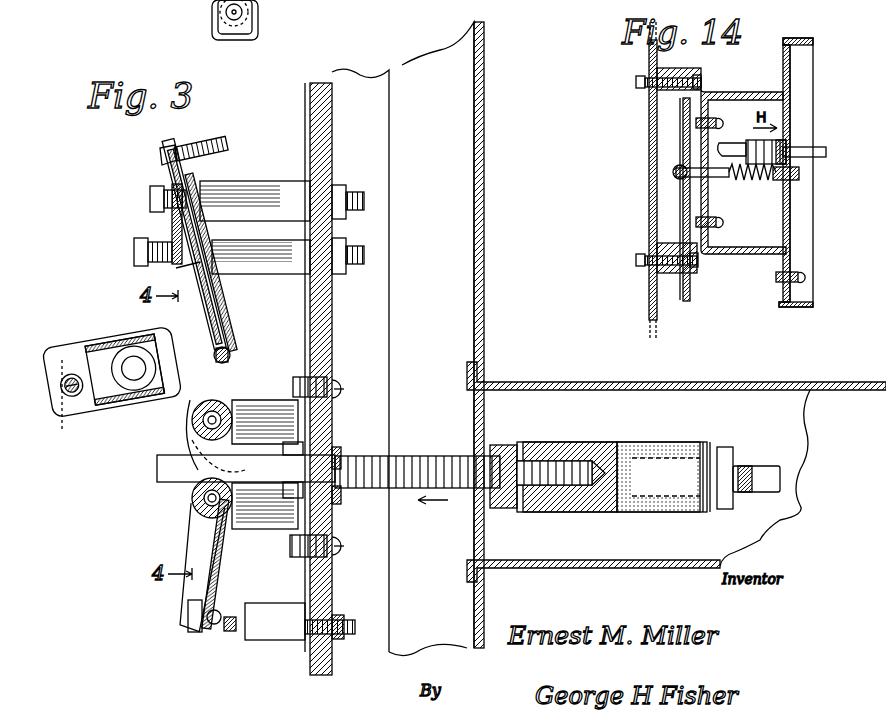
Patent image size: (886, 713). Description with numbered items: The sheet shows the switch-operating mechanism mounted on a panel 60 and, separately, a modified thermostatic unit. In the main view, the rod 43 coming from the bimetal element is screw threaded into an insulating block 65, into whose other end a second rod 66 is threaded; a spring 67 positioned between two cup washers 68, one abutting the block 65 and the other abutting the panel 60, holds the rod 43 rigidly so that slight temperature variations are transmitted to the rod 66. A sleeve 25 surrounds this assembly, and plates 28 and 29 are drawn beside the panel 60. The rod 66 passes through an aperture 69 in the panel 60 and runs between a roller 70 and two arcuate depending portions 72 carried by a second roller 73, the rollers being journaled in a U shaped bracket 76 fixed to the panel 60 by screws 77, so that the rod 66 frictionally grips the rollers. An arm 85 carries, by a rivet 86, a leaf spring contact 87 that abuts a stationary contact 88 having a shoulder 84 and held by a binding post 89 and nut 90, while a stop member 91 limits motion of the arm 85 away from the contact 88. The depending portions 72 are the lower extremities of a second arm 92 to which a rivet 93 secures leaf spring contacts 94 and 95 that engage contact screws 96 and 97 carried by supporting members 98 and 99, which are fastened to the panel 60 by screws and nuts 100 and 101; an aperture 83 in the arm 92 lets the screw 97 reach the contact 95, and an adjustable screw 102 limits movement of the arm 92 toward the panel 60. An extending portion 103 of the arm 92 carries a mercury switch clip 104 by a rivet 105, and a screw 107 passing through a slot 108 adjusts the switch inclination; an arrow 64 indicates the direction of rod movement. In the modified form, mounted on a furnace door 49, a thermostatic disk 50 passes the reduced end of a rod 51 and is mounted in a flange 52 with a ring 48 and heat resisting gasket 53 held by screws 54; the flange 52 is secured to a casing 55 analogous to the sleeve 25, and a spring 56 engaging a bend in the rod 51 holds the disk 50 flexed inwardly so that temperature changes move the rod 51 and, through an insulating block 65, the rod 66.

In FIG. 3, the sleeve 25 is at (640, 383).
In FIG. 3, the plate 28 is at (468, 112).
In FIG. 3, the plate 29 is at (364, 96).
In FIG. 3, the rod 43 is at (760, 478).
In FIG. 14, the ring 48 is at (678, 274).
In FIG. 14, the furnace door 49 is at (650, 62).
In FIG. 14, the disk 50 is at (683, 135).
In FIG. 14, the rod 51 is at (733, 150).
In FIG. 14, the flange 52 is at (690, 72).
In FIG. 3, the heat resisting gasket 53 is at (176, 230).
In FIG. 14, the heat resisting gasket 53 is at (655, 70).
In FIG. 14, the screws 54 is at (638, 82).
In FIG. 14, the casing 55 is at (750, 96).
In FIG. 14, the spring 56 is at (752, 180).
In FIG. 3, the panel 60 is at (318, 115).
In FIG. 3, the direction arrow 64 is at (130, 490).
In FIG. 3, the insulating block 65 is at (660, 455).
In FIG. 14, the insulating block 65 is at (774, 142).
In FIG. 3, the second rod 66 is at (160, 468).
In FIG. 14, the second rod 66 is at (800, 150).
In FIG. 3, the spring 67 is at (424, 452).
In FIG. 3, the cup washers 68 is at (338, 450).
In FIG. 3, the aperture 69 is at (336, 498).
In FIG. 3, the roller 70 is at (196, 512).
In FIG. 3, the depending portions 72 is at (194, 442).
In FIG. 3, the second roller 73 is at (192, 422).
In FIG. 3, the U shaped bracket 76 is at (268, 408).
In FIG. 3, the screws 77 is at (340, 384).
In FIG. 3, the aperture 83 is at (160, 182).
In FIG. 3, the shoulder 84 is at (244, 642).
In FIG. 3, the arm 85 is at (236, 566).
In FIG. 3, the rivet 86 is at (240, 532).
In FIG. 3, the leaf spring contact 87 is at (214, 12).
In FIG. 3, the stationary contact 88 is at (232, 636).
In FIG. 3, the binding post 89 is at (352, 634).
In FIG. 3, the nut 90 is at (334, 640).
In FIG. 3, the stop member 91 is at (186, 626).
In FIG. 3, the second arm 92 is at (175, 327).
In FIG. 3, the rivet 93 is at (230, 355).
In FIG. 3, the leaf spring contact 94 is at (180, 272).
In FIG. 3, the leaf spring contact 95 is at (198, 185).
In FIG. 3, the contact screw 96 is at (136, 249).
In FIG. 3, the contact screw 97 is at (152, 196).
In FIG. 3, the supporting member 98 is at (272, 270).
In FIG. 3, the supporting member 99 is at (278, 190).
In FIG. 3, the screws and nuts 100 is at (345, 270).
In FIG. 3, the screws and nuts 101 is at (342, 188).
In FIG. 3, the adjustable screw 102 is at (196, 150).
In FIG. 3, the extending portion 103 is at (78, 420).
In FIG. 3, the mercury switch clip 104 is at (98, 340).
In FIG. 3, the rivet 105 is at (130, 383).
In FIG. 3, the screw 107 is at (68, 386).
In FIG. 3, the slot 108 is at (57, 402).